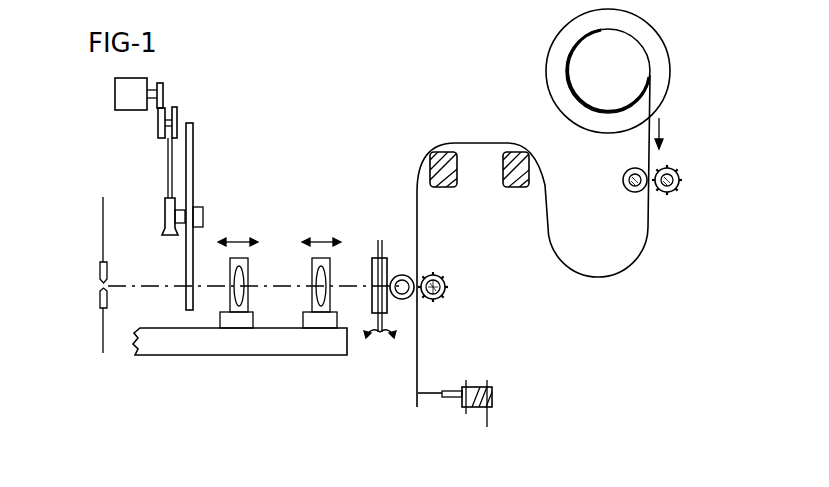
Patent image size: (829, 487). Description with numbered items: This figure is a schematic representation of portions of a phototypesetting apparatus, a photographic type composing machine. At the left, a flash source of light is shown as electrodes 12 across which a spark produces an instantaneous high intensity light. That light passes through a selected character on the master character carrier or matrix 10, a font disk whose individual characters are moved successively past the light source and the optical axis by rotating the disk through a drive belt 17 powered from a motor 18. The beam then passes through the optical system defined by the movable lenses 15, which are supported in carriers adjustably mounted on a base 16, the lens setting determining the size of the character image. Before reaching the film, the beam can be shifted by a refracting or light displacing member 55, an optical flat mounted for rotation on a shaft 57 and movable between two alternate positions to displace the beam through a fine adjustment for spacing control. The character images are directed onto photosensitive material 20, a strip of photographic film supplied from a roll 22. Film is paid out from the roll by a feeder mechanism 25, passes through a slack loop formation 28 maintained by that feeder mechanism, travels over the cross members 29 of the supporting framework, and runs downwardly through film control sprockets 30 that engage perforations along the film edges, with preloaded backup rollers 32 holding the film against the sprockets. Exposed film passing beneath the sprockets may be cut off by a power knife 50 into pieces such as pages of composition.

The master character carrier or matrix 10 is at (193, 137).
The electrodes 12 is at (96, 279).
The movable lenses 15 is at (303, 298).
The base 16 is at (248, 345).
The drive belt 17 is at (168, 165).
The motor 18 is at (125, 91).
The photosensitive material 20 is at (416, 180).
The roll 22 is at (563, 69).
The feeder mechanism 25 is at (657, 204).
The loop formation 28 is at (559, 241).
The cross members 29 is at (505, 178).
The film control sprockets 30 is at (433, 303).
The preloaded backup rollers 32 is at (405, 273).
The power knife 50 is at (447, 412).
The refracting or light displacing member 55 is at (372, 270).
The shaft 57 is at (380, 345).